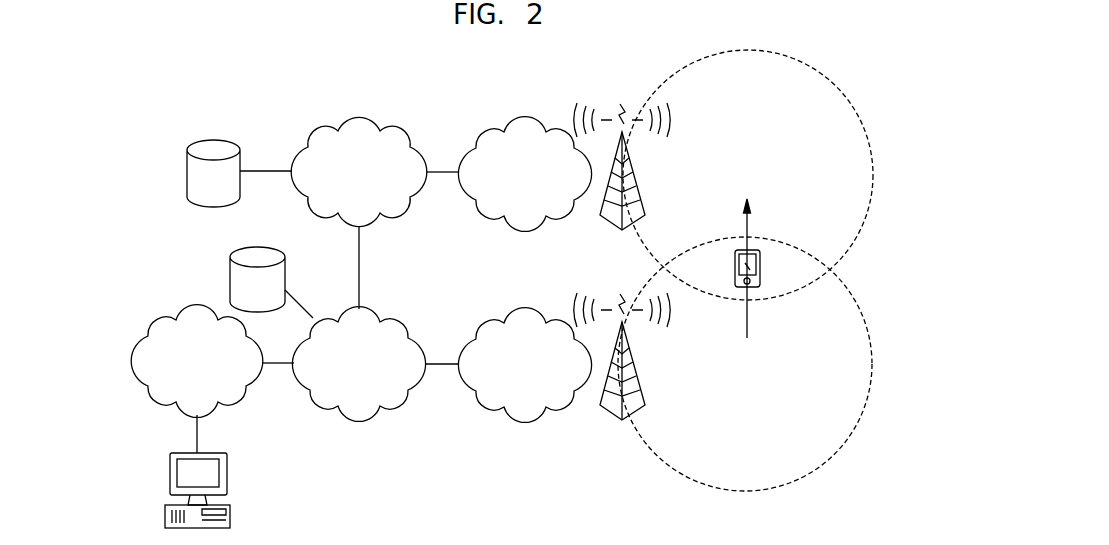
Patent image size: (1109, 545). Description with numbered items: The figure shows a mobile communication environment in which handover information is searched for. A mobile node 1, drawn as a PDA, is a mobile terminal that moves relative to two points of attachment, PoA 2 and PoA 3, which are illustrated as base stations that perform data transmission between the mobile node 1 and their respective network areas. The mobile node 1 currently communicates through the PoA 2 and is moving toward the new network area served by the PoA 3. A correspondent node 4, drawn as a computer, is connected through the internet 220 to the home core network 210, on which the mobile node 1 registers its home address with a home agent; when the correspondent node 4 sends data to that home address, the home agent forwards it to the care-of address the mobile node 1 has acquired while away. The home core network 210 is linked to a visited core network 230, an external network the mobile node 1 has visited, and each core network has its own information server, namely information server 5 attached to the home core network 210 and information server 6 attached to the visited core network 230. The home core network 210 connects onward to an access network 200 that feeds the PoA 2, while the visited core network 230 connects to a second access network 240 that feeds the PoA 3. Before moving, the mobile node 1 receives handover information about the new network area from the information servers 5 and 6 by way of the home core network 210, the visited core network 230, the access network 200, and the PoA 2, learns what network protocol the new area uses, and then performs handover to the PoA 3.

The mobile node 1 is at (763, 272).
The point of attachment 2 is at (640, 374).
The point of attachment 3 is at (640, 185).
The correspondent node 4 is at (228, 477).
The information server 5 is at (258, 245).
The information server 6 is at (213, 138).
The access network 200 is at (563, 421).
The home core network 210 is at (352, 420).
The internet 220 is at (143, 345).
The visited core network 230 is at (350, 116).
The visited access network 240 is at (498, 122).